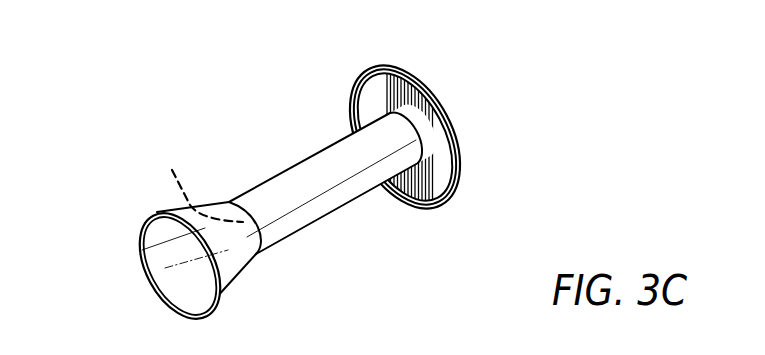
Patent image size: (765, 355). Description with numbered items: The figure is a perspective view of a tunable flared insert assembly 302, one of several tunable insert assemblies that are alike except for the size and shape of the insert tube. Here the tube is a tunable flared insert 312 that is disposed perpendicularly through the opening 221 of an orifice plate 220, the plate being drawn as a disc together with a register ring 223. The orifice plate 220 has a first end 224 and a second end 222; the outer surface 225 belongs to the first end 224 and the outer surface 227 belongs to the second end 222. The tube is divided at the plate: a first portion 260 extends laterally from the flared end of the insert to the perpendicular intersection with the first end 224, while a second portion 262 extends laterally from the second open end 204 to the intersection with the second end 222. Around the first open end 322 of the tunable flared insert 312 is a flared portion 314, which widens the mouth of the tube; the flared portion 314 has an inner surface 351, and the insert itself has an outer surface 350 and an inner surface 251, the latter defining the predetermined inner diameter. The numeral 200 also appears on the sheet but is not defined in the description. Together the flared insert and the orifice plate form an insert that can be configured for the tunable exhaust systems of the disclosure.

The assembly 200 is at (300, 4).
The second open end 204 is at (469, 128).
The orifice plate 220 is at (402, 66).
The opening 221 is at (384, 109).
The second end 222 is at (420, 80).
The register ring 223 is at (463, 165).
The first end 224 is at (455, 192).
The outer surface of the first end 225 is at (435, 173).
The outer surface of the second end 227 is at (469, 152).
The inner surface 251 is at (198, 182).
The first portion 260 is at (345, 232).
The second portion 262 is at (457, 108).
The tunable insert assembly 302 is at (128, 199).
The tunable flared insert 312 is at (262, 186).
The flared portion 314 is at (243, 277).
The first open end 322 is at (168, 267).
The outer surface 350 is at (353, 200).
The inner surface 351 is at (177, 288).